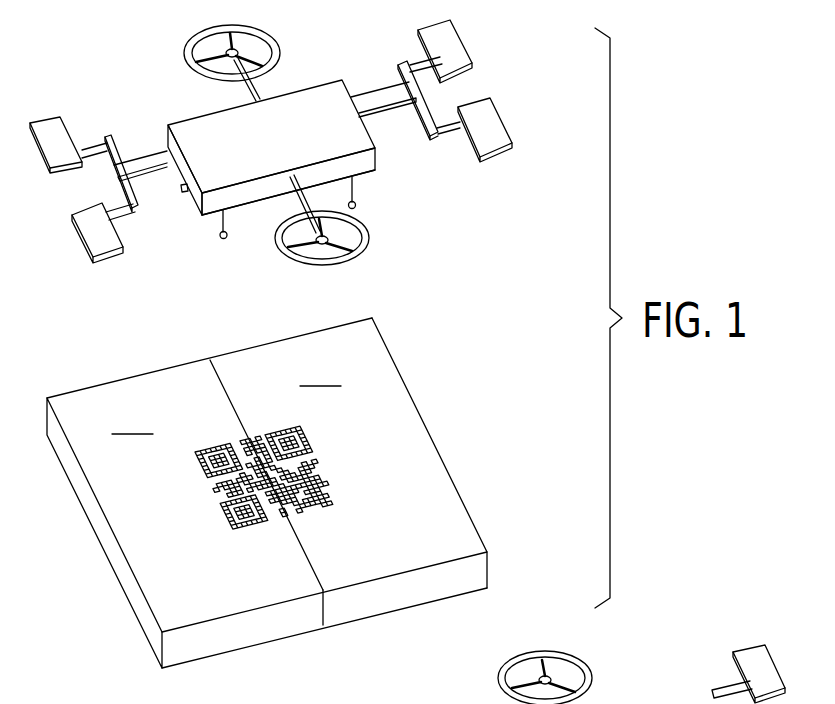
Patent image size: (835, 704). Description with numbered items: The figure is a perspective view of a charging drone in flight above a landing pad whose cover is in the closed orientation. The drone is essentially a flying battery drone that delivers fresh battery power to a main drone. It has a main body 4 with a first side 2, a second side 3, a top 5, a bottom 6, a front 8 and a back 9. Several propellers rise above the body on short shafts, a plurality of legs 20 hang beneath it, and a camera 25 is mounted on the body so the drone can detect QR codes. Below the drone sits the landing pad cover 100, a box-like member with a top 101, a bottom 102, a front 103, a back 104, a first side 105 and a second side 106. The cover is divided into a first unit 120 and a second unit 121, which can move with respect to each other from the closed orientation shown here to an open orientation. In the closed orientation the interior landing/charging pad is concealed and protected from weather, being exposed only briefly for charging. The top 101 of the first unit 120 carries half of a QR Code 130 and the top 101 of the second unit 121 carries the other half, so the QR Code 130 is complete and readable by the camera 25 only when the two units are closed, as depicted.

The first side 2 is at (356, 97).
The second side 3 is at (167, 138).
The main body 4 is at (308, 92).
The top 5 is at (340, 147).
The bottom 6 is at (241, 212).
The front 8 is at (355, 172).
The back 9 is at (203, 117).
The leg 20 is at (220, 237).
The camera 25 is at (181, 191).
The landing pad cover 100 is at (170, 570).
The top 101 is at (163, 607).
The bottom 102 is at (215, 657).
The front 103 is at (368, 598).
The back 104 is at (82, 389).
The first side 105 is at (87, 493).
The second side 106 is at (410, 392).
The first unit 120 is at (132, 421).
The second unit 121 is at (320, 373).
The QR Code 130 is at (320, 462).